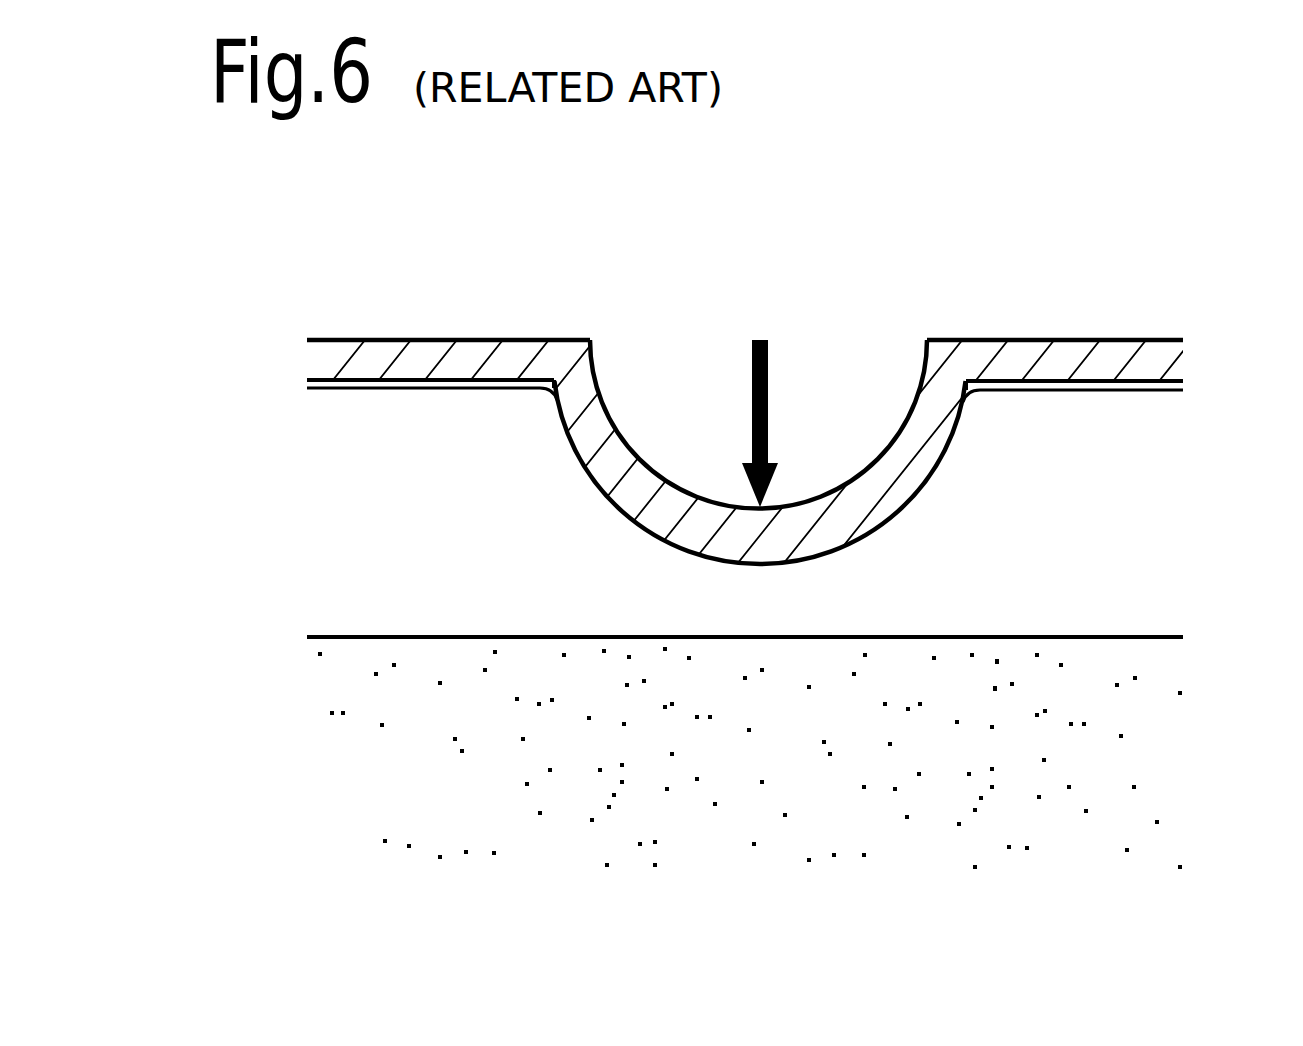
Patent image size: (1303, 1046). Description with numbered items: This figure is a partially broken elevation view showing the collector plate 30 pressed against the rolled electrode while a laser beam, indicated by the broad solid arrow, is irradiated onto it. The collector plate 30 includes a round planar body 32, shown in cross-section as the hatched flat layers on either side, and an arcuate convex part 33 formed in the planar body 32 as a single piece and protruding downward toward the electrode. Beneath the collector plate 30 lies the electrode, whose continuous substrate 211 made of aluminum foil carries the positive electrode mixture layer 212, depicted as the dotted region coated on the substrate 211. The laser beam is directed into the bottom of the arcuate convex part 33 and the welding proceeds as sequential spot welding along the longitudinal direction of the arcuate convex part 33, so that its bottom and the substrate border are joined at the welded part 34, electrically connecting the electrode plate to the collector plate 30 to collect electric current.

The collector plate 30 is at (380, 335).
The planar body 32 is at (1140, 370).
The arcuate convex part 33 is at (876, 466).
The welded part 34 is at (765, 566).
The substrate 211 is at (490, 548).
The positive electrode mixture layer 212 is at (515, 812).